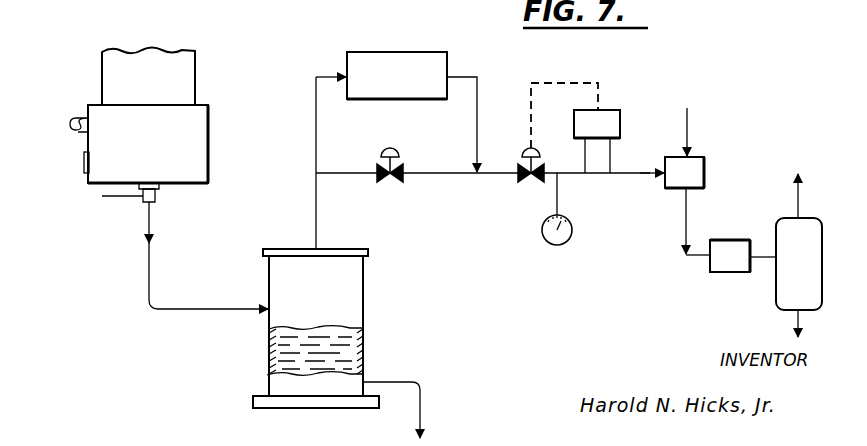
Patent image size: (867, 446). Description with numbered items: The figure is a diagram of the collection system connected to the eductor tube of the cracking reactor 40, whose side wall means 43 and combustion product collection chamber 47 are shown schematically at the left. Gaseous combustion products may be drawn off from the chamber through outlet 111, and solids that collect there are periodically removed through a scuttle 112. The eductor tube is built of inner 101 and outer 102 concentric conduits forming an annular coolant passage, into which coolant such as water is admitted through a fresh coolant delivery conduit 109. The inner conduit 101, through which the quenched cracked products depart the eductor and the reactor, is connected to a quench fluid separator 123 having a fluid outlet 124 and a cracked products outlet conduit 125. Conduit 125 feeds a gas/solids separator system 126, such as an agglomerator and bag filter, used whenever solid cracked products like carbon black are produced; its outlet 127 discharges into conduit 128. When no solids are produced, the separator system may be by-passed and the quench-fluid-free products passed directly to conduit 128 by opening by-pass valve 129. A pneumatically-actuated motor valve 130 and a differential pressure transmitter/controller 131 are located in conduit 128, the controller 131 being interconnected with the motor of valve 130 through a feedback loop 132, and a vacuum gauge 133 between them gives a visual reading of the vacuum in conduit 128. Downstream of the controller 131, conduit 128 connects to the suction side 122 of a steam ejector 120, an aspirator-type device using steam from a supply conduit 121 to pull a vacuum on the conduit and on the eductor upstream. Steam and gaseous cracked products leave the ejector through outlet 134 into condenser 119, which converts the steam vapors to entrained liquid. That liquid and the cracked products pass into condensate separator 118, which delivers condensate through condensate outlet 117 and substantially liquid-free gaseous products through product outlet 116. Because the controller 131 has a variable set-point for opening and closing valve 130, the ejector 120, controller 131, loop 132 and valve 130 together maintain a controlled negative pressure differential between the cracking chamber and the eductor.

The reactor 40 is at (97, 65).
The side wall means 43 is at (182, 70).
The combustion product collection chamber 47 is at (182, 151).
The inner conduit 101 is at (152, 231).
The outer conduit 102 is at (157, 196).
The fresh coolant delivery conduit 109 is at (125, 197).
The outlet 111 is at (72, 118).
The scuttle 112 is at (82, 165).
The product outlet 116 is at (790, 195).
The condensate outlet 117 is at (792, 316).
The condensate separator 118 is at (793, 284).
The condenser 119 is at (720, 272).
The steam ejector 120 is at (697, 172).
The supply conduit 121 is at (690, 125).
The suction side 122 is at (648, 178).
The quench fluid separator 123 is at (340, 296).
The fluid outlet 124 is at (425, 400).
The cracked products outlet conduit 125 is at (316, 225).
The gas/solids separator system 126 is at (413, 67).
The gas/solids separator system outlet 127 is at (480, 110).
The conduit 128 is at (424, 175).
The by-pass valve 129 is at (390, 148).
The pneumatically-actuated motor valve 130 is at (532, 178).
The differential pressure transmitter/controller 131 is at (600, 126).
The feedback loop 132 is at (580, 83).
The vacuum gauge 133 is at (565, 240).
The outlet 134 is at (687, 195).